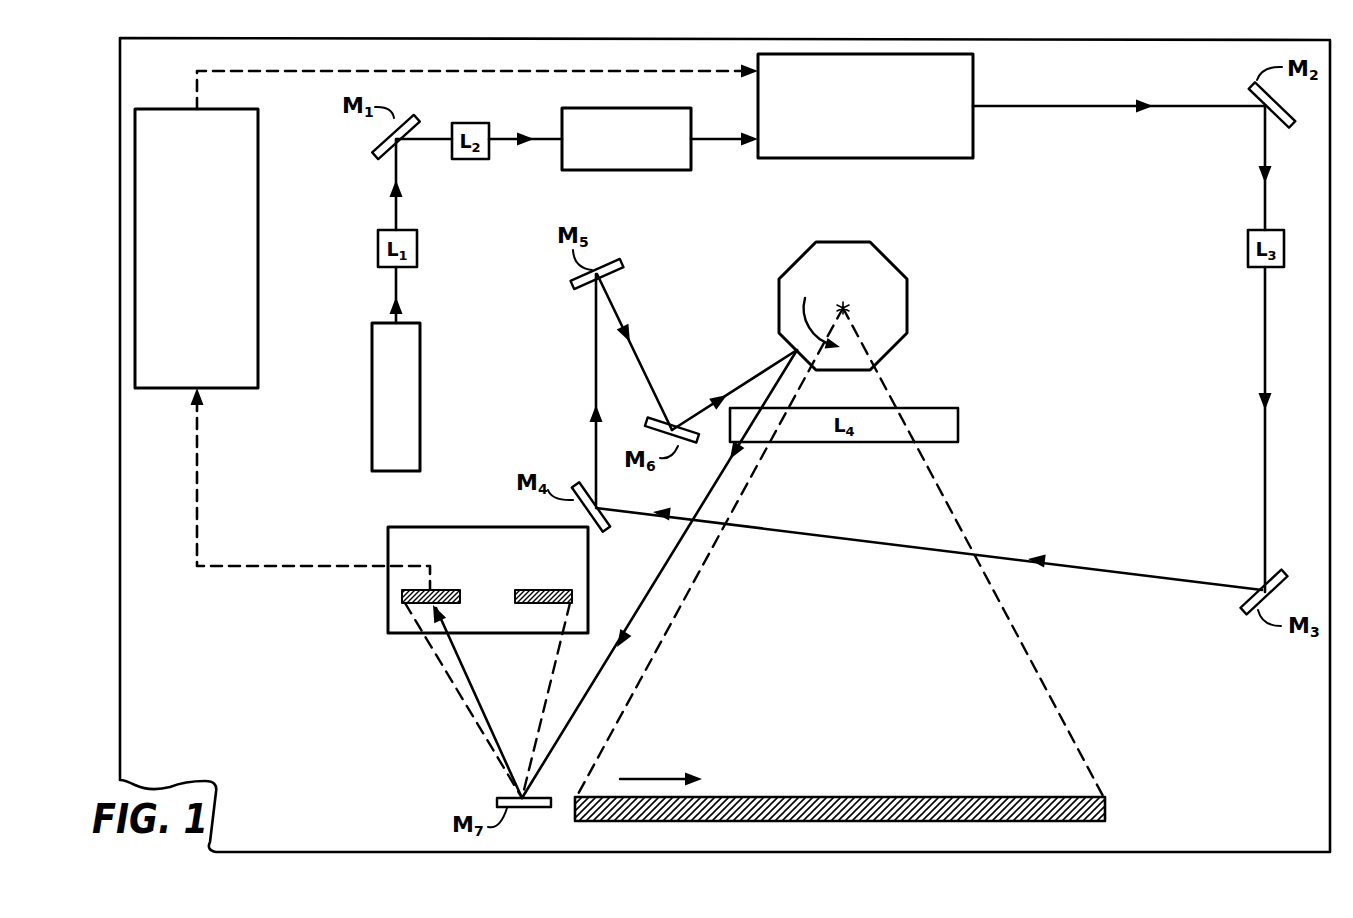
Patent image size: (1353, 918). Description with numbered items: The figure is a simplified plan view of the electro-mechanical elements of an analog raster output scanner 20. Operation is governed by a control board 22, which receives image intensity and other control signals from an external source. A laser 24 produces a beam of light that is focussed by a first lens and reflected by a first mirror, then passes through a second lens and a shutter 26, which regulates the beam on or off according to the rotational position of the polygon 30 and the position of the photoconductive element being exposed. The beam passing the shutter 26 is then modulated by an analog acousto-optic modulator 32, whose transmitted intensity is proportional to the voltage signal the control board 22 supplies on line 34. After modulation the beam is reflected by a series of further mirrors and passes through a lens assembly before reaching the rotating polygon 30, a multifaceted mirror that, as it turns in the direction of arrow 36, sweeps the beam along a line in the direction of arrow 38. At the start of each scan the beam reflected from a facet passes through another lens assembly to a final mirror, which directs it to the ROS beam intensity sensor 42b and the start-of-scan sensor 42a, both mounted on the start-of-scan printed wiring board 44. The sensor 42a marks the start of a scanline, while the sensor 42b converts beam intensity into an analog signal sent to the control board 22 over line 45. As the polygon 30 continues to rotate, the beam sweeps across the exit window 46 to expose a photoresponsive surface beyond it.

The analog raster output scanner 20 is at (116, 60).
The control board 22 is at (258, 195).
The laser 24 is at (395, 471).
The shutter 26 is at (640, 170).
The rotating polygon mirror 30 is at (867, 242).
The analog acousto-optic modulator 32 is at (933, 158).
The line 34 is at (476, 72).
The arrow 36 is at (805, 297).
The arrow 38 is at (657, 776).
The start-of-scan sensor 42a is at (561, 588).
The ROS beam intensity sensor 42b is at (443, 588).
The start-of-scan printed wiring board 44 is at (386, 617).
The line 45 is at (197, 522).
The exit window 46 is at (667, 822).